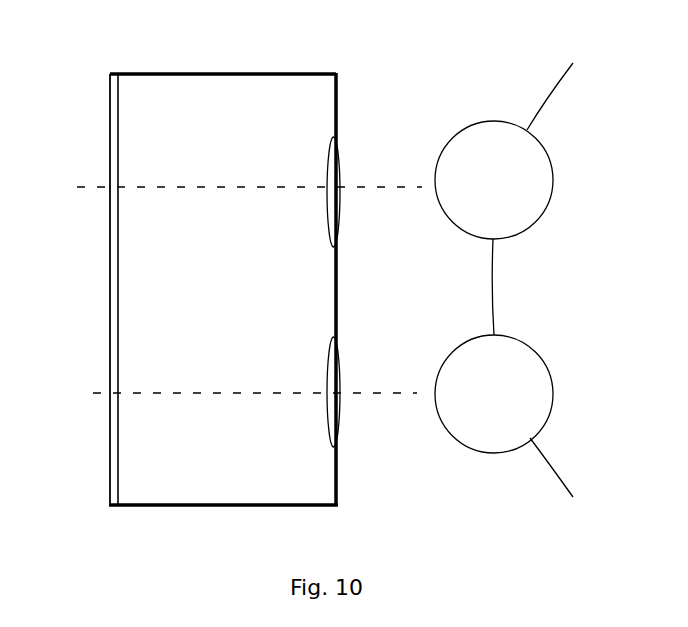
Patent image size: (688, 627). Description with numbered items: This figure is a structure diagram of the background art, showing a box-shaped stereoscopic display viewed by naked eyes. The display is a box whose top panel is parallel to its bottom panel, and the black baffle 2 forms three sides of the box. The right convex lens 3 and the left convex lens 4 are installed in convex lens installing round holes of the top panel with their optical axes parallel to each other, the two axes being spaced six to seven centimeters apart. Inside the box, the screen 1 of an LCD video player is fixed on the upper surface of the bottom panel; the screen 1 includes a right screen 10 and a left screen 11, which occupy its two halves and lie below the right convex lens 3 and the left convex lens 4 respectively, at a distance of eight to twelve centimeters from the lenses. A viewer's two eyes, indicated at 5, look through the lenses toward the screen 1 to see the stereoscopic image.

The screen 1 is at (110, 292).
The black baffle 2 is at (278, 506).
The right convex lens 3 is at (334, 165).
The left convex lens 4 is at (336, 415).
The spectacles / viewer eyes 5 is at (557, 273).
The right screen 10 is at (110, 129).
The left screen 11 is at (110, 437).